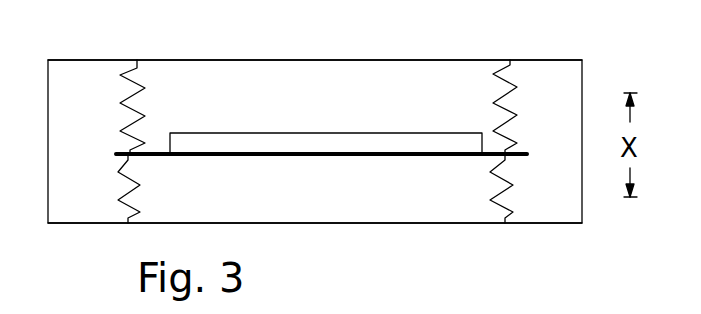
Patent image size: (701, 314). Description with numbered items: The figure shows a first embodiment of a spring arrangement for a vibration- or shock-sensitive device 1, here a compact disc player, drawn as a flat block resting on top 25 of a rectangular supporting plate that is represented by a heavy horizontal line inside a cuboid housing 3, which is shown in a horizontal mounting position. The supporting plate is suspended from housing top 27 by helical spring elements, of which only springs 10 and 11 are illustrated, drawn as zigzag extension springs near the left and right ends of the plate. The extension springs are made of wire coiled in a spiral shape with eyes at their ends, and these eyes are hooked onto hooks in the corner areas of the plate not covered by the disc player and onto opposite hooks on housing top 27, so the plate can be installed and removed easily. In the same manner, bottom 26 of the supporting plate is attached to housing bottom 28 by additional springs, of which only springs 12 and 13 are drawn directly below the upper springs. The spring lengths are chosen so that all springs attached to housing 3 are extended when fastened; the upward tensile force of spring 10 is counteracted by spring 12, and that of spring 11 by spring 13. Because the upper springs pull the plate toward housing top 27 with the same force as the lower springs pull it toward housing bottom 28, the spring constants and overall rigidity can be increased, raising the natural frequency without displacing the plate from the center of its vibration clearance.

The vibration- or shock-sensitive device 1 is at (305, 142).
The housing 3 is at (532, 223).
The spring 10 is at (122, 92).
The spring 11 is at (510, 78).
The spring 12 is at (120, 197).
The spring 13 is at (499, 192).
The top of supporting plate 25 is at (147, 152).
The bottom of supporting plate 26 is at (182, 158).
The housing top 27 is at (232, 60).
The housing bottom 28 is at (283, 223).